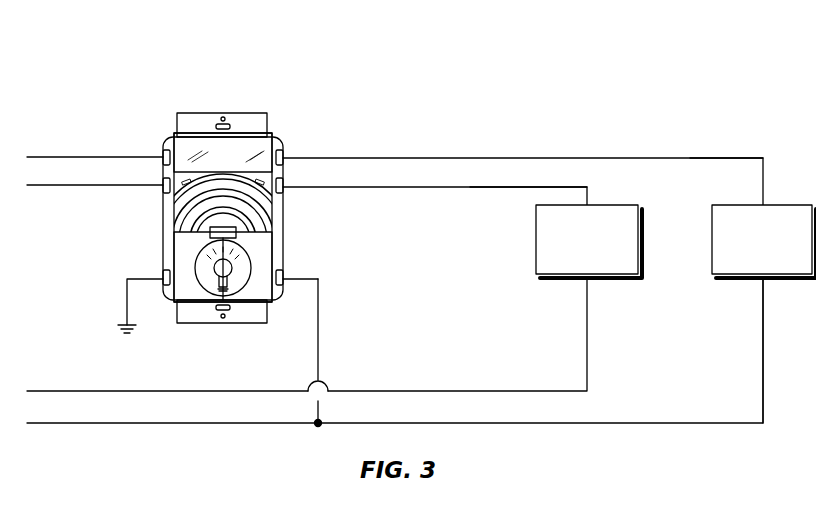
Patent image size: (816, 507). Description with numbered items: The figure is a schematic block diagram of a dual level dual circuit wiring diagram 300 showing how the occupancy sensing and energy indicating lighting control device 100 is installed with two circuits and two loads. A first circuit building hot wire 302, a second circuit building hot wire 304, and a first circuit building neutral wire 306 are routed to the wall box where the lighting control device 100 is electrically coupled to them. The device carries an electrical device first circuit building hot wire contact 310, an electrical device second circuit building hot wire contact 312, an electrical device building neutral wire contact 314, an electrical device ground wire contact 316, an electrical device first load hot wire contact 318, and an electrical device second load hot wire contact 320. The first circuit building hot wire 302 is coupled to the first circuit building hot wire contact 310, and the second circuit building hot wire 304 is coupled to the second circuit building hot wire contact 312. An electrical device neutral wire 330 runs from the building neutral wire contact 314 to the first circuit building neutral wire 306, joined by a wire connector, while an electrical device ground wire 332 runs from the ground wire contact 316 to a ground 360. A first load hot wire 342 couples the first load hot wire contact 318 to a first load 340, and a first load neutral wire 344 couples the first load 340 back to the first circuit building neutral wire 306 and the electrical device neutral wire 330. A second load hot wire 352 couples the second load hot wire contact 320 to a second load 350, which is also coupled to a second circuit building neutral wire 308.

The dual level dual circuit wiring diagram 300 is at (712, 68).
The occupancy sensing and energy indicating lighting control device 100 is at (222, 113).
The first circuit building hot wire 302 is at (77, 157).
The second circuit building hot wire 304 is at (77, 185).
The first circuit building neutral wire 306 is at (198, 423).
The second circuit building neutral wire 308 is at (198, 391).
The electrical device first circuit building hot wire contact 310 is at (163, 157).
The electrical device second circuit building hot wire contact 312 is at (163, 185).
The electrical device building neutral wire contact 314 is at (283, 277).
The electrical device ground wire contact 316 is at (163, 277).
The electrical device first load hot wire contact 318 is at (283, 157).
The electrical device second load hot wire contact 320 is at (283, 186).
The electrical device neutral wire 330 is at (318, 338).
The electrical device ground wire 332 is at (127, 307).
The first load 340 is at (764, 241).
The first load hot wire 342 is at (720, 158).
The first load neutral wire 344 is at (763, 350).
The second load 350 is at (589, 241).
The second load hot wire 352 is at (492, 188).
The ground 360 is at (118, 330).